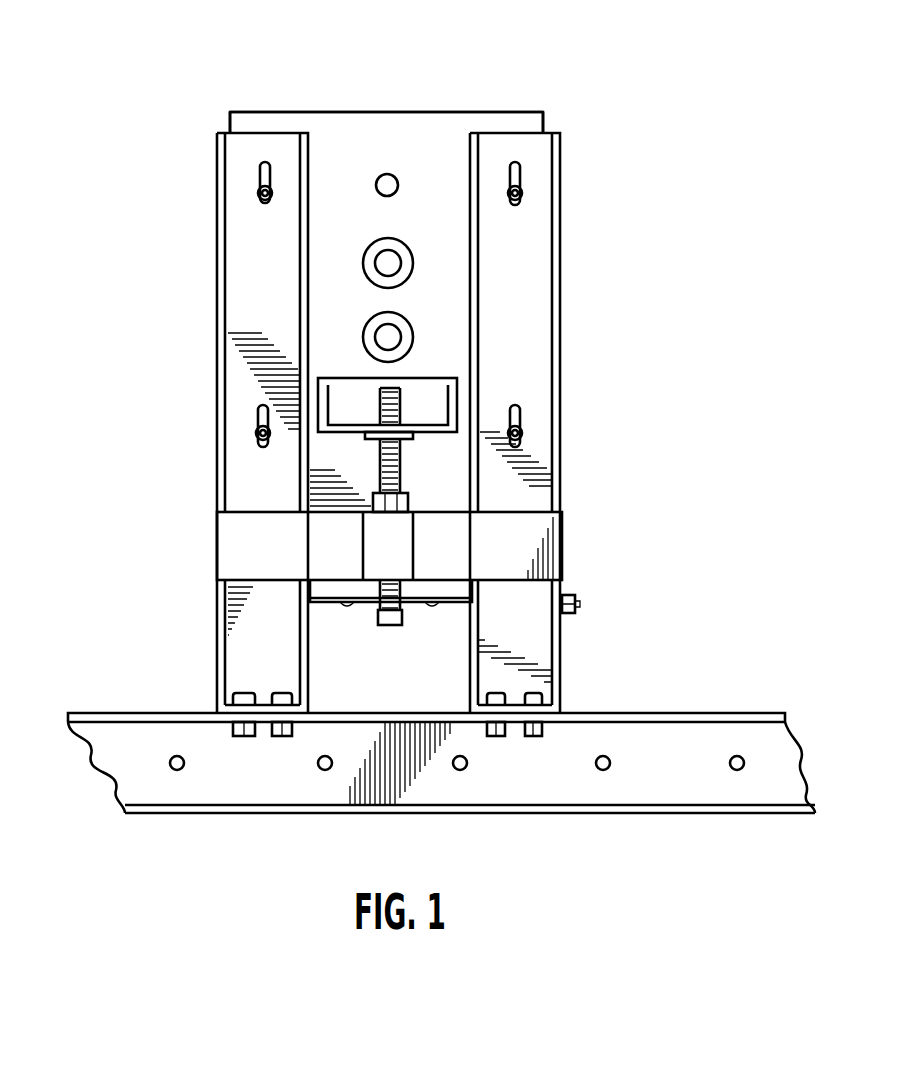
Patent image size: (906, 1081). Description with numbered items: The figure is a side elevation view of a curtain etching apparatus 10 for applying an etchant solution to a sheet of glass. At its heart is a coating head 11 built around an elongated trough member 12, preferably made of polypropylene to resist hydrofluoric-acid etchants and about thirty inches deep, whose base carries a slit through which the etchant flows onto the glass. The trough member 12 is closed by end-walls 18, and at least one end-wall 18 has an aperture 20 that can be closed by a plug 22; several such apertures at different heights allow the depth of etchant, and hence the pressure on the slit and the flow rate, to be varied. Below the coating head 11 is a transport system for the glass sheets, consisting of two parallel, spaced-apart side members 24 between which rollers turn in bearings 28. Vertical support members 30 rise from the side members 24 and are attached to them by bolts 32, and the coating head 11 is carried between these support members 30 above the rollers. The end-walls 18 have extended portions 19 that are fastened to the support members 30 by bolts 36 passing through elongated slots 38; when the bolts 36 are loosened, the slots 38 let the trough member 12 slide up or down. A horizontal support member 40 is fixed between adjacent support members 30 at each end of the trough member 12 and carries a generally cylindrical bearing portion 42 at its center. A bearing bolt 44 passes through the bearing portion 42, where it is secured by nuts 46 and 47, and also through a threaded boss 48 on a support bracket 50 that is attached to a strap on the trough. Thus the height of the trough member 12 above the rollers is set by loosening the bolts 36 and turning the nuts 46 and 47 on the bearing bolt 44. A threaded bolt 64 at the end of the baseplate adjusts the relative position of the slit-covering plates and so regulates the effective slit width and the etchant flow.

The curtain etching apparatus 10 is at (80, 678).
The coating head 11 is at (527, 94).
The trough member 12 is at (342, 111).
The end-walls 18 is at (439, 131).
The extended portions 19 is at (261, 120).
The aperture 20 is at (388, 172).
The plugs 22 is at (381, 325).
The side members 24 is at (780, 788).
The bearings 28 is at (181, 767).
The support members 30 is at (567, 334).
The bolts 32 is at (257, 700).
The bolts 36 is at (262, 197).
The elongated slots 38 is at (262, 170).
The horizontal support member 40 is at (238, 548).
The bearing portion 42 is at (408, 545).
The bearing bolt 44 is at (380, 468).
The nut 46 is at (370, 500).
The nut 47 is at (378, 596).
The threaded boss 48 is at (360, 434).
The support bracket 50 is at (353, 382).
The threaded bolts 64 is at (577, 603).